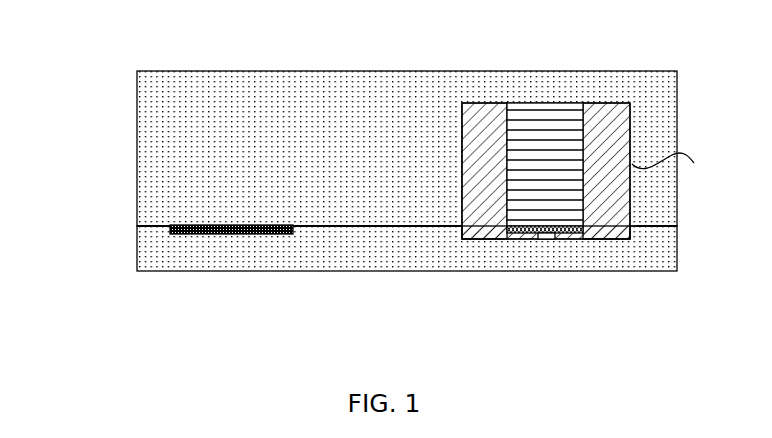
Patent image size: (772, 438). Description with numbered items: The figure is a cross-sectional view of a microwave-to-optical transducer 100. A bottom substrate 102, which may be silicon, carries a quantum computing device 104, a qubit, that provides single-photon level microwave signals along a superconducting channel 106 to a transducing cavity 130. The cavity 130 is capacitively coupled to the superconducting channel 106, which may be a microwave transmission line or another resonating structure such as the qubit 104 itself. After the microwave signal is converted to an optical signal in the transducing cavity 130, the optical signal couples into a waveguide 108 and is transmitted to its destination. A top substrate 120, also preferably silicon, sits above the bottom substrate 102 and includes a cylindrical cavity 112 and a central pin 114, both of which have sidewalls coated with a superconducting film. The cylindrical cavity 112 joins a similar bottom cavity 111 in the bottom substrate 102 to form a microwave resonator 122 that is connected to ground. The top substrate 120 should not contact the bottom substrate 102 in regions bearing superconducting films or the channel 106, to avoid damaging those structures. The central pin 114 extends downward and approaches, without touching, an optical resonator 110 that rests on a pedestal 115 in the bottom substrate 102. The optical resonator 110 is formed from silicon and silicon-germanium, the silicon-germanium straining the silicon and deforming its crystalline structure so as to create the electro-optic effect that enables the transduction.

The microwave-to-optical transducer 100 is at (108, 34).
The bottom substrate 102 is at (137, 250).
The quantum computing device 104 is at (229, 234).
The superconducting channel 106 is at (362, 228).
The waveguide 108 is at (659, 232).
The optical resonator 110 is at (568, 240).
The bottom cavity 111 is at (481, 240).
The cylindrical cavity 112 is at (609, 101).
The central pin 114 is at (547, 101).
The pedestal 115 is at (546, 240).
The top substrate 120 is at (137, 165).
The microwave resonator 122 is at (680, 162).
The transducing cavity 130 is at (484, 100).